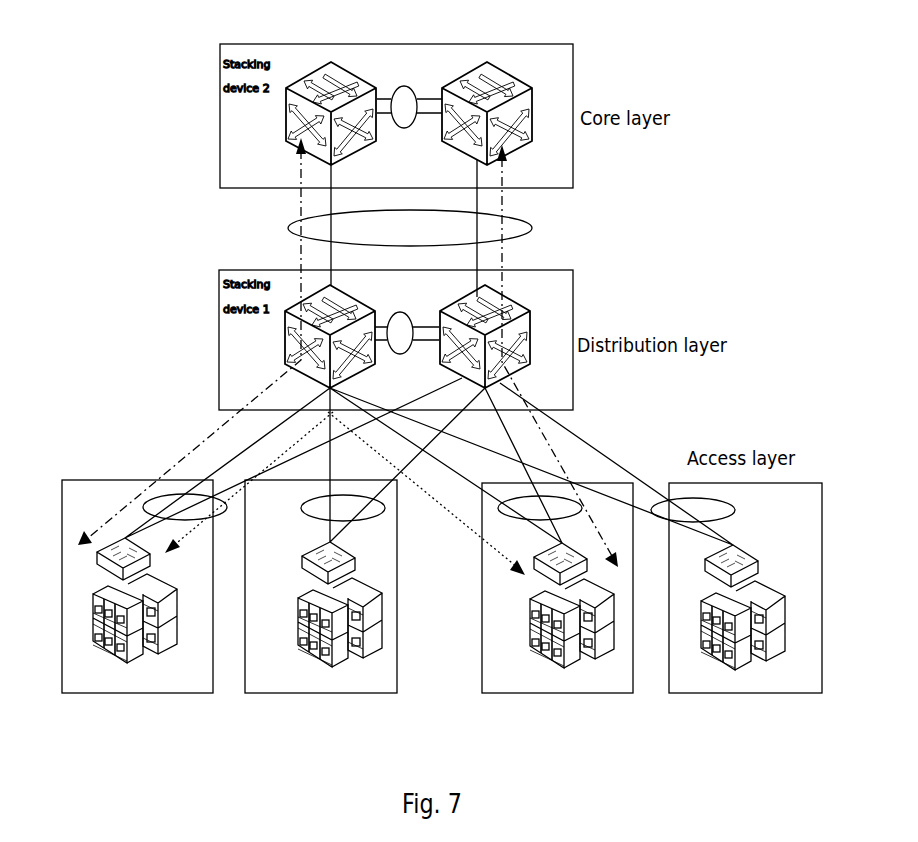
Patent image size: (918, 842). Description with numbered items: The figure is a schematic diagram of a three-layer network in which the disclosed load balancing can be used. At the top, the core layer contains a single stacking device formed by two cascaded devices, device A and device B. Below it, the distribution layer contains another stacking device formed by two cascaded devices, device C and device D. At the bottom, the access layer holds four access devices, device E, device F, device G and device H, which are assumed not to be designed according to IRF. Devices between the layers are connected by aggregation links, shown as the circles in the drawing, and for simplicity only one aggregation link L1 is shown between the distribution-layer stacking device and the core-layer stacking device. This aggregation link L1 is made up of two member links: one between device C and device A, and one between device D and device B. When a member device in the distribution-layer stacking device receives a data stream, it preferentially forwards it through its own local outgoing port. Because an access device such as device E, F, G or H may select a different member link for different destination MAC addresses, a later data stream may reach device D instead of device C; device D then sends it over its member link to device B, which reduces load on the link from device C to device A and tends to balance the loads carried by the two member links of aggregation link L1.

The device A is at (306, 122).
The device B is at (498, 122).
The device C is at (317, 338).
The device D is at (493, 348).
The aggregation link L1 is at (410, 228).
The device E is at (144, 586).
The device F is at (321, 586).
The device G is at (557, 588).
The device H is at (736, 588).